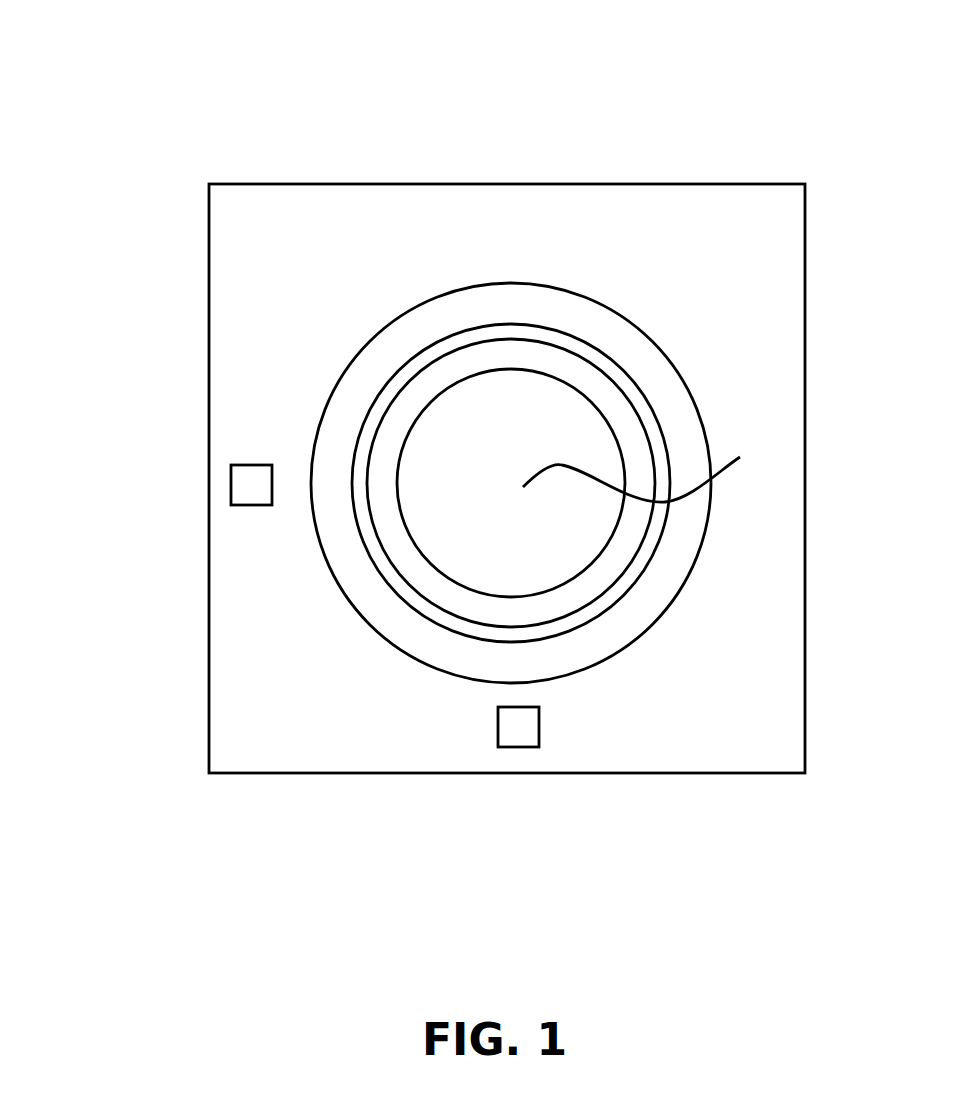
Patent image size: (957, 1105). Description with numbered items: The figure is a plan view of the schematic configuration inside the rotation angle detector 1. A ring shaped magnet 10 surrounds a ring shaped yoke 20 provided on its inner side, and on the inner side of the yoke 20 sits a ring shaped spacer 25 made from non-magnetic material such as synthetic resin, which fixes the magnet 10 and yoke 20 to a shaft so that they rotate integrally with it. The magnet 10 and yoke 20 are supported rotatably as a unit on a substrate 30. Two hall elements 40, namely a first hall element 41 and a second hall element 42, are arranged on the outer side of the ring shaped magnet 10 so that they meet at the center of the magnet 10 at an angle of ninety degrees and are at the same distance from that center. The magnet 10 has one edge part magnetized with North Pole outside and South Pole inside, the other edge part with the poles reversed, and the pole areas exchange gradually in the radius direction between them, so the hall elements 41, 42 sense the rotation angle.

The rotation angle detector 1 is at (418, 458).
The ring shaped magnet 10 is at (623, 338).
The ring shaped yoke 20 is at (640, 400).
The ring shaped spacer 25 is at (515, 353).
The substrate 30 is at (247, 328).
The hall elements 40 is at (286, 673).
The hall element 41 is at (230, 484).
The hall element 42 is at (522, 747).